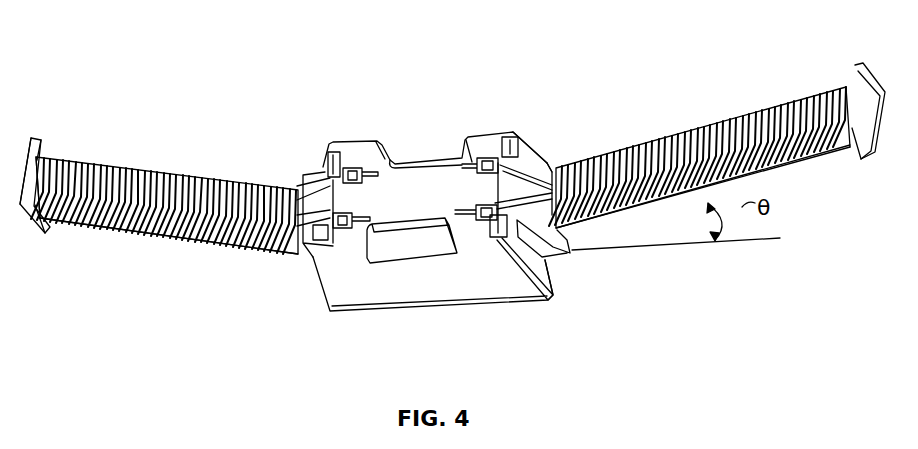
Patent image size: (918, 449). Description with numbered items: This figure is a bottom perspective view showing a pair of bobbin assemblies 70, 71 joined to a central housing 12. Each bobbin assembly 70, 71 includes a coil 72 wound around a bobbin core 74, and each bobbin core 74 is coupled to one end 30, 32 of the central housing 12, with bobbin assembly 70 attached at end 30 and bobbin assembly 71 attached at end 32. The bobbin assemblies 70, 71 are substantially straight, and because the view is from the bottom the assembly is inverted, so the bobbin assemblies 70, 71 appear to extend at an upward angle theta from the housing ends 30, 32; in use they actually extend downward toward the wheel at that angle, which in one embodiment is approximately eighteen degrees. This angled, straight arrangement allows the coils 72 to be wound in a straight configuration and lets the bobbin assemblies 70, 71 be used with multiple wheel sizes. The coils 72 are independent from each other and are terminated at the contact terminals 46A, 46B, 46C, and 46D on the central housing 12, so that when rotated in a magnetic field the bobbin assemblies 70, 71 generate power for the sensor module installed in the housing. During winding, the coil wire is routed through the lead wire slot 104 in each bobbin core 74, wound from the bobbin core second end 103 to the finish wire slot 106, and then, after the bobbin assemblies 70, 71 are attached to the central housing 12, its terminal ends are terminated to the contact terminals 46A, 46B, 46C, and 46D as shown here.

The central housing 12 is at (423, 143).
The end 30 is at (328, 158).
The end 32 is at (542, 162).
The contact terminal 46A is at (487, 157).
The contact terminal 46B is at (482, 222).
The contact terminal 46C is at (345, 224).
The contact terminal 46D is at (352, 168).
The bobbin assembly 70 is at (160, 158).
The bobbin assembly 71 is at (743, 103).
The coil 72 is at (138, 233).
The bobbin core 74 is at (58, 150).
The bobbin core second end 103 is at (36, 138).
The lead wire slot 104 is at (525, 178).
The finish wire slot 106 is at (553, 275).